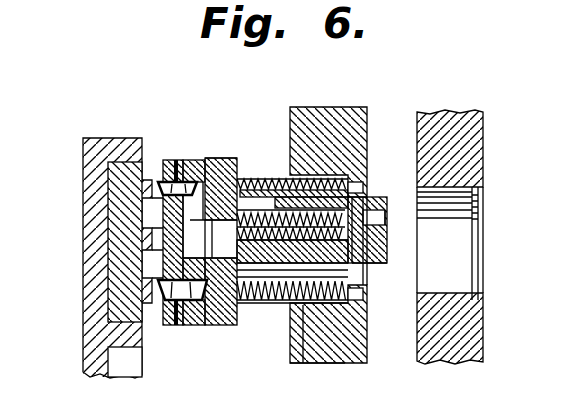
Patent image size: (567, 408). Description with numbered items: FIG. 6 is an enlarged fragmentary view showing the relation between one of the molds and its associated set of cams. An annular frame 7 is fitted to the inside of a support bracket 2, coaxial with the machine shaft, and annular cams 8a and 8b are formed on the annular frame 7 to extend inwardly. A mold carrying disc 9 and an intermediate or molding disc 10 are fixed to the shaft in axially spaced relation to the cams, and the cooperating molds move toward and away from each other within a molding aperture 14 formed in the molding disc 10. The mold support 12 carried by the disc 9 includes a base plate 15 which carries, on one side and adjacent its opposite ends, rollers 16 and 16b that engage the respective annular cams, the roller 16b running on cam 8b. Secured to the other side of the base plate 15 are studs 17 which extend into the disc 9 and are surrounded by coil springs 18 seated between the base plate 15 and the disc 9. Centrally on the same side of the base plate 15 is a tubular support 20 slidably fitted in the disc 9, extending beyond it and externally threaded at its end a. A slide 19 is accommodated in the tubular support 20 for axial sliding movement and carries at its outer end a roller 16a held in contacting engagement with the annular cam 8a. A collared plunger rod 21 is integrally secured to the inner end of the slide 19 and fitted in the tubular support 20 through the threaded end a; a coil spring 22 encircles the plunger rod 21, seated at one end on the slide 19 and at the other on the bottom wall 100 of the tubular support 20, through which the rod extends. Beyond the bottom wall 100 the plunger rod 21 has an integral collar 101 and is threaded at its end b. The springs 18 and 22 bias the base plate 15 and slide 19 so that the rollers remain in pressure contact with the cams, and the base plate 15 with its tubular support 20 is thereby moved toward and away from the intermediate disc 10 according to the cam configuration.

The support bracket 2 is at (92, 258).
The annular frame 7 is at (85, 321).
The annular cam 8a is at (148, 233).
The annular cam 8b is at (150, 192).
The mold carrying disc 9 is at (358, 137).
The intermediate molding disc 10 is at (453, 127).
The mold support 12 is at (246, 102).
The molding aperture 14 is at (463, 226).
The base plate 15 is at (190, 323).
The roller 16 is at (158, 178).
The roller 16a is at (203, 160).
The roller 16b is at (155, 300).
The stud 17 is at (279, 176).
The coil spring 18 is at (255, 178).
The slide 19 is at (218, 310).
The tubular support 20 is at (330, 363).
The collared plunger rod 21 is at (303, 363).
The coil spring 22 is at (262, 292).
The bottom wall 100 is at (288, 216).
The collar 101 is at (373, 212).
The threaded end a is at (372, 265).
The threaded end b is at (391, 223).